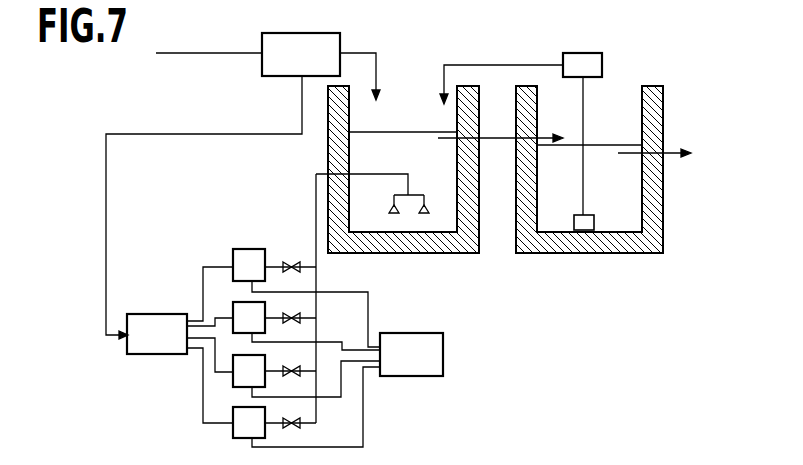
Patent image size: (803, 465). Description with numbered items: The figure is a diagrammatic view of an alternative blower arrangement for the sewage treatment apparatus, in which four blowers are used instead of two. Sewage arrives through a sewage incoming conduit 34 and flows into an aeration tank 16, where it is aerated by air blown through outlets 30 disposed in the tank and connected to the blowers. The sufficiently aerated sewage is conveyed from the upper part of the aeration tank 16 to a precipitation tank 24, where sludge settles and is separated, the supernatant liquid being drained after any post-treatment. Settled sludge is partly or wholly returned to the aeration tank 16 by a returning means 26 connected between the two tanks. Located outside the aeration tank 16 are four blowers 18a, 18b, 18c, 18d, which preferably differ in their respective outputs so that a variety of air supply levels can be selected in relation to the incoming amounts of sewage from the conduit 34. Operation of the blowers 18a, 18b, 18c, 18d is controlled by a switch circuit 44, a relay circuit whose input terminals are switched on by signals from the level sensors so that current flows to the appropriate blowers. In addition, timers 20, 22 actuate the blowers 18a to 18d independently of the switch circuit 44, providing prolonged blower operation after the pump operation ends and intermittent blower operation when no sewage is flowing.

The sewage incoming conduit 34 is at (322, 33).
The returning means 26 is at (590, 53).
The outlets 30 is at (392, 210).
The aeration tank 16 is at (458, 254).
The precipitation tank 24 is at (557, 254).
The blower 18a is at (258, 249).
The blower 18b is at (232, 310).
The blower 18c is at (233, 378).
The blower 18d is at (233, 432).
The switch circuit 44 is at (151, 314).
The timer 20 is at (437, 375).
The timer 22 is at (432, 378).